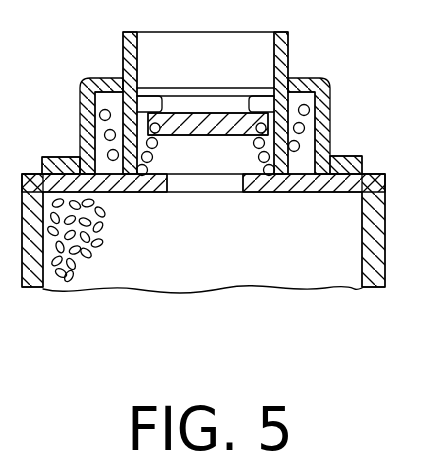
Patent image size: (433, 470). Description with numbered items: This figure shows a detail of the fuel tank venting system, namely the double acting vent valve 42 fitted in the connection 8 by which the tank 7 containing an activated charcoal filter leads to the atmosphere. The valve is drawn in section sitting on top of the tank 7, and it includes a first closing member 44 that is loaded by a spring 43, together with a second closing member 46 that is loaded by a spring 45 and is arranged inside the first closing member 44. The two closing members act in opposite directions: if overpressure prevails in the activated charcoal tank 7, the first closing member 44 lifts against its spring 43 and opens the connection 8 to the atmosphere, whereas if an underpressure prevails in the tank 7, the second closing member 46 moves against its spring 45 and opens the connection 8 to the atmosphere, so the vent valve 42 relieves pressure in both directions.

The tank 7 is at (340, 220).
The connection 8 is at (328, 97).
The double acting vent valve 42 is at (302, 64).
The spring 43 is at (80, 107).
The first closing member 44 is at (128, 163).
The spring 45 is at (258, 143).
The second closing member 46 is at (228, 120).